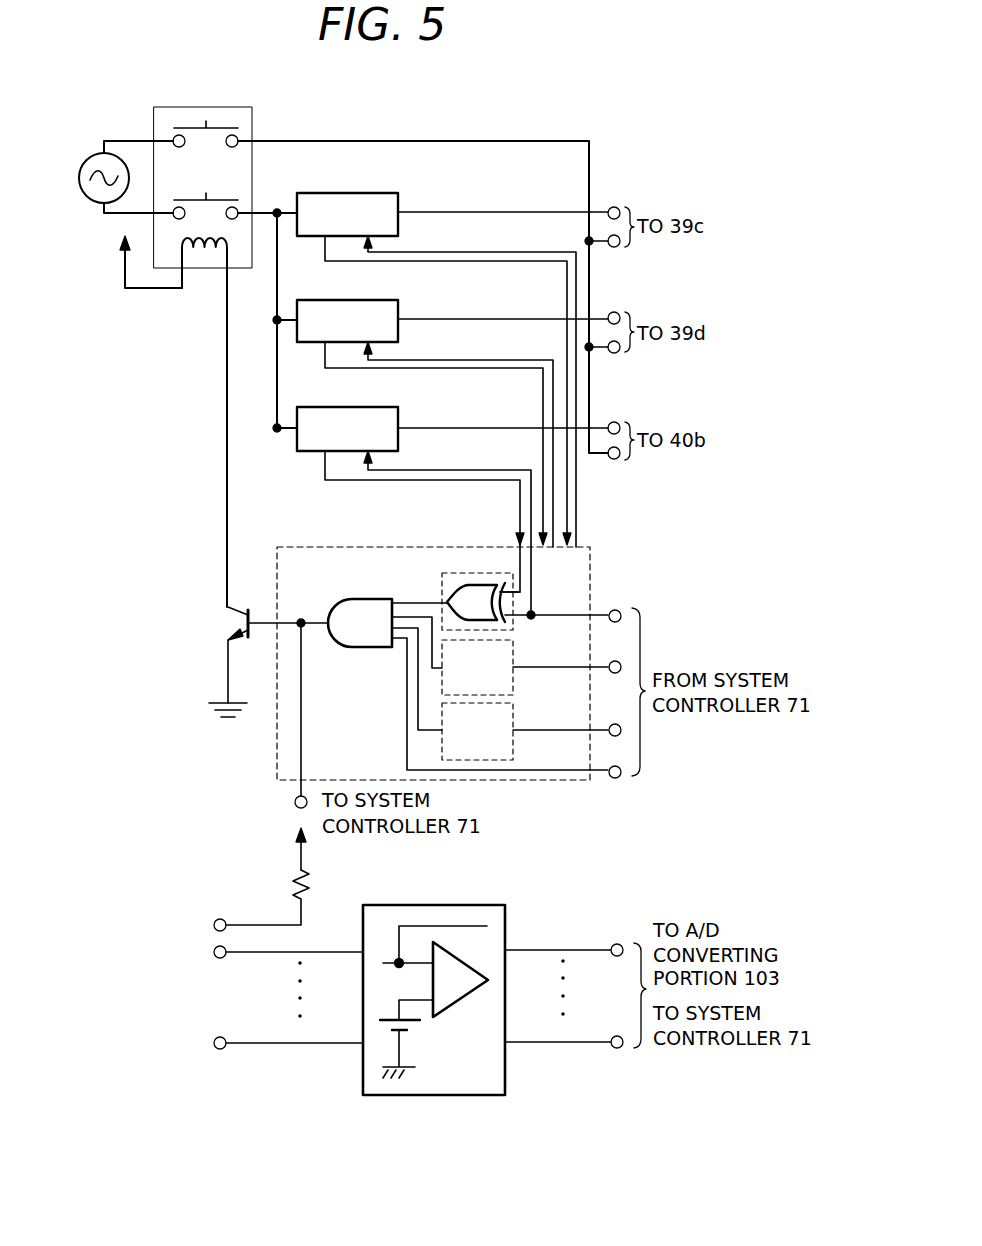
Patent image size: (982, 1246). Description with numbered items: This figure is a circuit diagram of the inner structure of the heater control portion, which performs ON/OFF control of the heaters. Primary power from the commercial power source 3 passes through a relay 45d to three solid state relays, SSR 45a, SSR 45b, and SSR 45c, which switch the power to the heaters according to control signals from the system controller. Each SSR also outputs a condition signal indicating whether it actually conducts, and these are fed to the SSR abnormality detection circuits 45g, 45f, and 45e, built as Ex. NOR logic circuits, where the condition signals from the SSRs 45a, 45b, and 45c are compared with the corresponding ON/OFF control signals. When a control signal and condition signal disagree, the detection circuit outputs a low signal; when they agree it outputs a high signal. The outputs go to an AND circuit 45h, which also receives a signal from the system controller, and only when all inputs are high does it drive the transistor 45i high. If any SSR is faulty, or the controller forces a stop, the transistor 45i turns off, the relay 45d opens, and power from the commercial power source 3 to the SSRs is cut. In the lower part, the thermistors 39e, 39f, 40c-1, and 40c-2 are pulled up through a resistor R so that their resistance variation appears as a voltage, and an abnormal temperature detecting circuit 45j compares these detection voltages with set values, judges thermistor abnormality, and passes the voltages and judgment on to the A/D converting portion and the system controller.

The commercial power source 3 is at (88, 160).
The relay 45d is at (252, 107).
The SSR (solid state relay) 45a is at (385, 193).
The SSR (solid state relay) 45b is at (385, 300).
The SSR (solid state relay) 45c is at (377, 407).
The SSR abnormality detection circuit 45e is at (455, 590).
The SSR abnormality detection circuit 45f is at (515, 688).
The SSR abnormality detection circuit 45g is at (515, 751).
The AND circuit 45h is at (358, 599).
The transistor 45i is at (228, 612).
The abnormal temperature detecting circuit 45j is at (445, 905).
The resistor R is at (310, 878).
The thermistor 39e is at (214, 926).
The thermistor 39f is at (214, 953).
The thermistor 40c-1 is at (207, 994).
The thermistor 40c-2 is at (214, 1044).